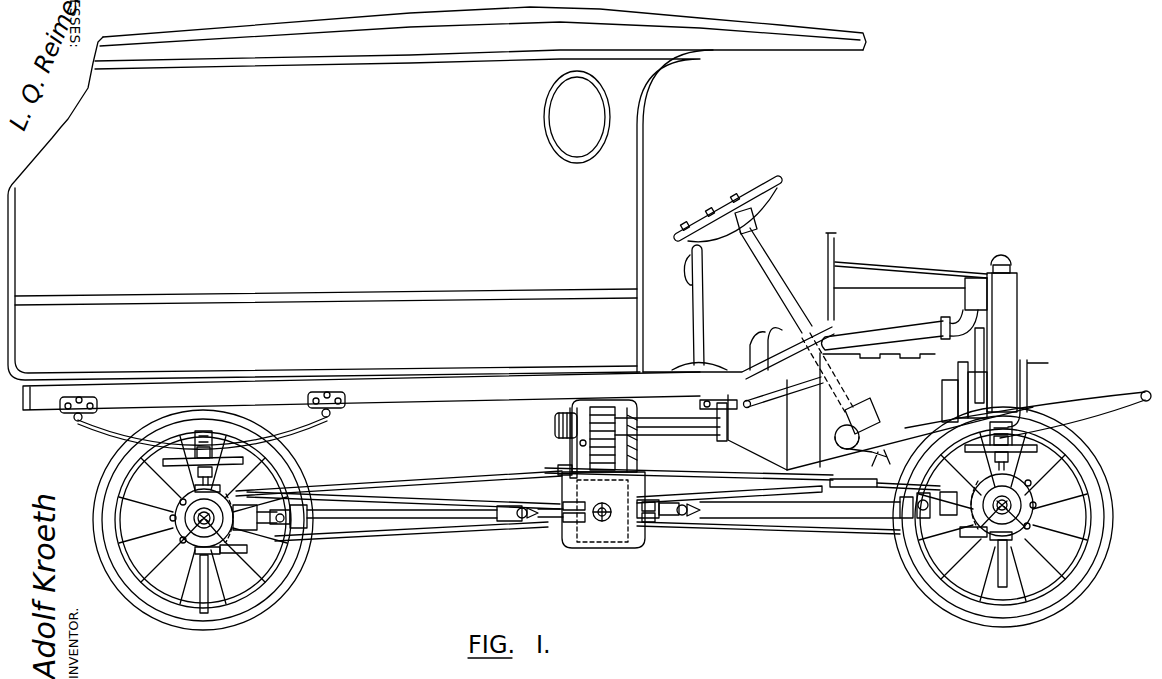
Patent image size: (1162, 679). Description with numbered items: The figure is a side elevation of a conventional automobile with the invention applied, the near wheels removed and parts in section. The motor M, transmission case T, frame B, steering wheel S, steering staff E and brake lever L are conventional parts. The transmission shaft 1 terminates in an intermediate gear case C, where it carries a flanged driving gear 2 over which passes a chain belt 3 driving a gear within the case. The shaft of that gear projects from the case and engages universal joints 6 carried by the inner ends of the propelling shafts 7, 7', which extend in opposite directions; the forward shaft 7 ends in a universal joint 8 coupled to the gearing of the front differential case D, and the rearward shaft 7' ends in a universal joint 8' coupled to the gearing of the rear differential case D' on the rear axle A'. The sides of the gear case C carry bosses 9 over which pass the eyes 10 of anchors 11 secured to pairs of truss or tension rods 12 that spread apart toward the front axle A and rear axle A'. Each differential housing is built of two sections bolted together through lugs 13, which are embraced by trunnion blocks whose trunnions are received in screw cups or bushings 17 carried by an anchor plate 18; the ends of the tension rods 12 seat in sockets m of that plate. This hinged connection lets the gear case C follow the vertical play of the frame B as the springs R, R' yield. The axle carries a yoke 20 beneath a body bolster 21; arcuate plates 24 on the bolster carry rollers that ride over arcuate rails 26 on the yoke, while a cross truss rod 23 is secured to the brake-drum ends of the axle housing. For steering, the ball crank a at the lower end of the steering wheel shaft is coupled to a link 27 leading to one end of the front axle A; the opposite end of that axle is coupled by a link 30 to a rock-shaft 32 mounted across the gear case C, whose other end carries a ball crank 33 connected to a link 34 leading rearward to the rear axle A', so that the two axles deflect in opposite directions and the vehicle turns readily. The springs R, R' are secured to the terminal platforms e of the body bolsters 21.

The transmission shaft 1 is at (647, 436).
The flanged driving gear 2 is at (566, 411).
The chain belt 3 is at (581, 441).
The universal joints 6 is at (505, 521).
The forwardly extending propelling shaft 7 is at (800, 533).
The rearwardly extending propelling shaft 7' is at (402, 539).
The universal joint 8 is at (783, 528).
The universal joint 8' is at (293, 558).
The bosses 9 is at (602, 523).
The loops or eyes 10 is at (612, 505).
The anchors 11 is at (569, 524).
The truss or tension rods 12 is at (350, 494).
The lobes or lugs 13 is at (178, 547).
The screw cups or bushings 17 is at (1036, 478).
The anchor plate or frame 18 is at (992, 548).
The yoke 20 is at (195, 455).
The body bolster 21 is at (205, 430).
The cross tension or truss rod 23 is at (204, 572).
The arcuate plates 24 is at (176, 492).
The arcuate plates or rails 26 is at (238, 463).
The link 27 is at (906, 462).
The link 30 is at (695, 471).
The rock-shaft 32 is at (535, 508).
The ball crank 33 is at (573, 504).
The link 34 is at (470, 479).
The steering segment gear ball-crank a is at (870, 458).
The terminal platforms e is at (214, 458).
The front axle A is at (1032, 513).
The rear axle A' is at (172, 512).
The frame B is at (414, 396).
The intermediate gear case C is at (630, 550).
The front differential case or housing D is at (1022, 507).
The rear differential case or housing D' is at (180, 519).
The steering staff E is at (762, 243).
The brake lever L is at (712, 320).
The motor M is at (935, 341).
The spring R is at (1028, 423).
The spring R' is at (180, 446).
The steering wheel S is at (776, 178).
The transmission case T is at (775, 423).
The sockets m is at (223, 555).